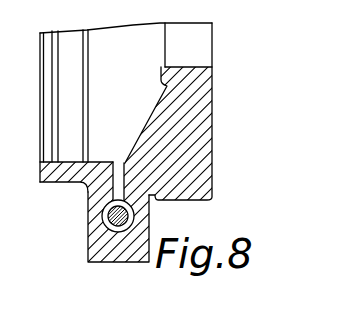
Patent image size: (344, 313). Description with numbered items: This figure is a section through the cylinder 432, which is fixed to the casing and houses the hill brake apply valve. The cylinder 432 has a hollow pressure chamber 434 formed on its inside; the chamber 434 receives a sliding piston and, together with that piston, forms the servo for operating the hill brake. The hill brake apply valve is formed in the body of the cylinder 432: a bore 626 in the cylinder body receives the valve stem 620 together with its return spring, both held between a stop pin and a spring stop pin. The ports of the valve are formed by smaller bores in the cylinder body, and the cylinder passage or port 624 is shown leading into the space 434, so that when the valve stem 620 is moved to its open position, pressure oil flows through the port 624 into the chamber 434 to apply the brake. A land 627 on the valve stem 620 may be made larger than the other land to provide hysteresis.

The cylinder 432 is at (202, 172).
The hollow pressure chamber 434 is at (160, 107).
The port 624 is at (121, 173).
The valve stem 620 is at (128, 217).
The bore 626 is at (108, 216).
The land 627 is at (90, 236).